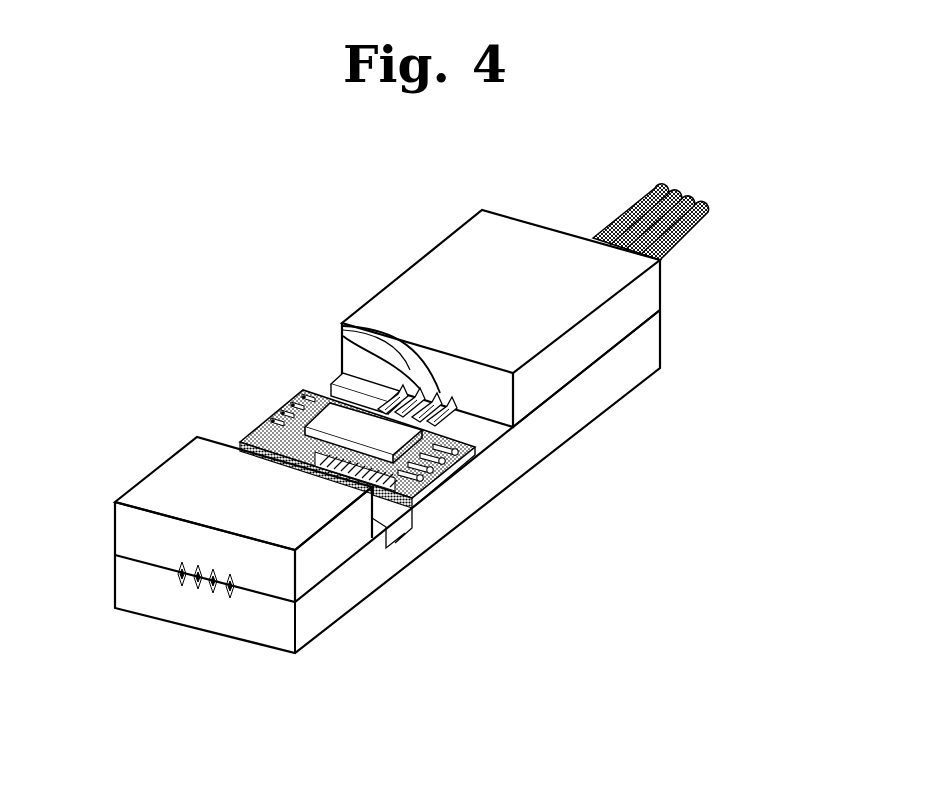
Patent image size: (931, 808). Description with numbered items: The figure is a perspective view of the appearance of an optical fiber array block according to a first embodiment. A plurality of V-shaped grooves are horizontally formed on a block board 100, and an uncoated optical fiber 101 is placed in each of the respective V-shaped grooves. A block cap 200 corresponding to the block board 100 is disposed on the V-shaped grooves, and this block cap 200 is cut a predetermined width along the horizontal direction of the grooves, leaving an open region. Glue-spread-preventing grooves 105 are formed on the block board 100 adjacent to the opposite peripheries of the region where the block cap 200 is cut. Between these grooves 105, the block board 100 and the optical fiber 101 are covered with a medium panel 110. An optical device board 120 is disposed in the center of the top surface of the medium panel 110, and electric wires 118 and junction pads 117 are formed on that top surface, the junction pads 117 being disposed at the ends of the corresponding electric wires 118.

The block board 100 is at (607, 390).
The uncoated optical fiber 101 is at (347, 333).
The glue-spread-preventing grooves 105 is at (497, 461).
The medium panel 110 is at (437, 478).
The junction pads 117 is at (264, 426).
The electric wires 118 is at (289, 400).
The optical device board 120 is at (340, 422).
The block cap 200 is at (642, 302).